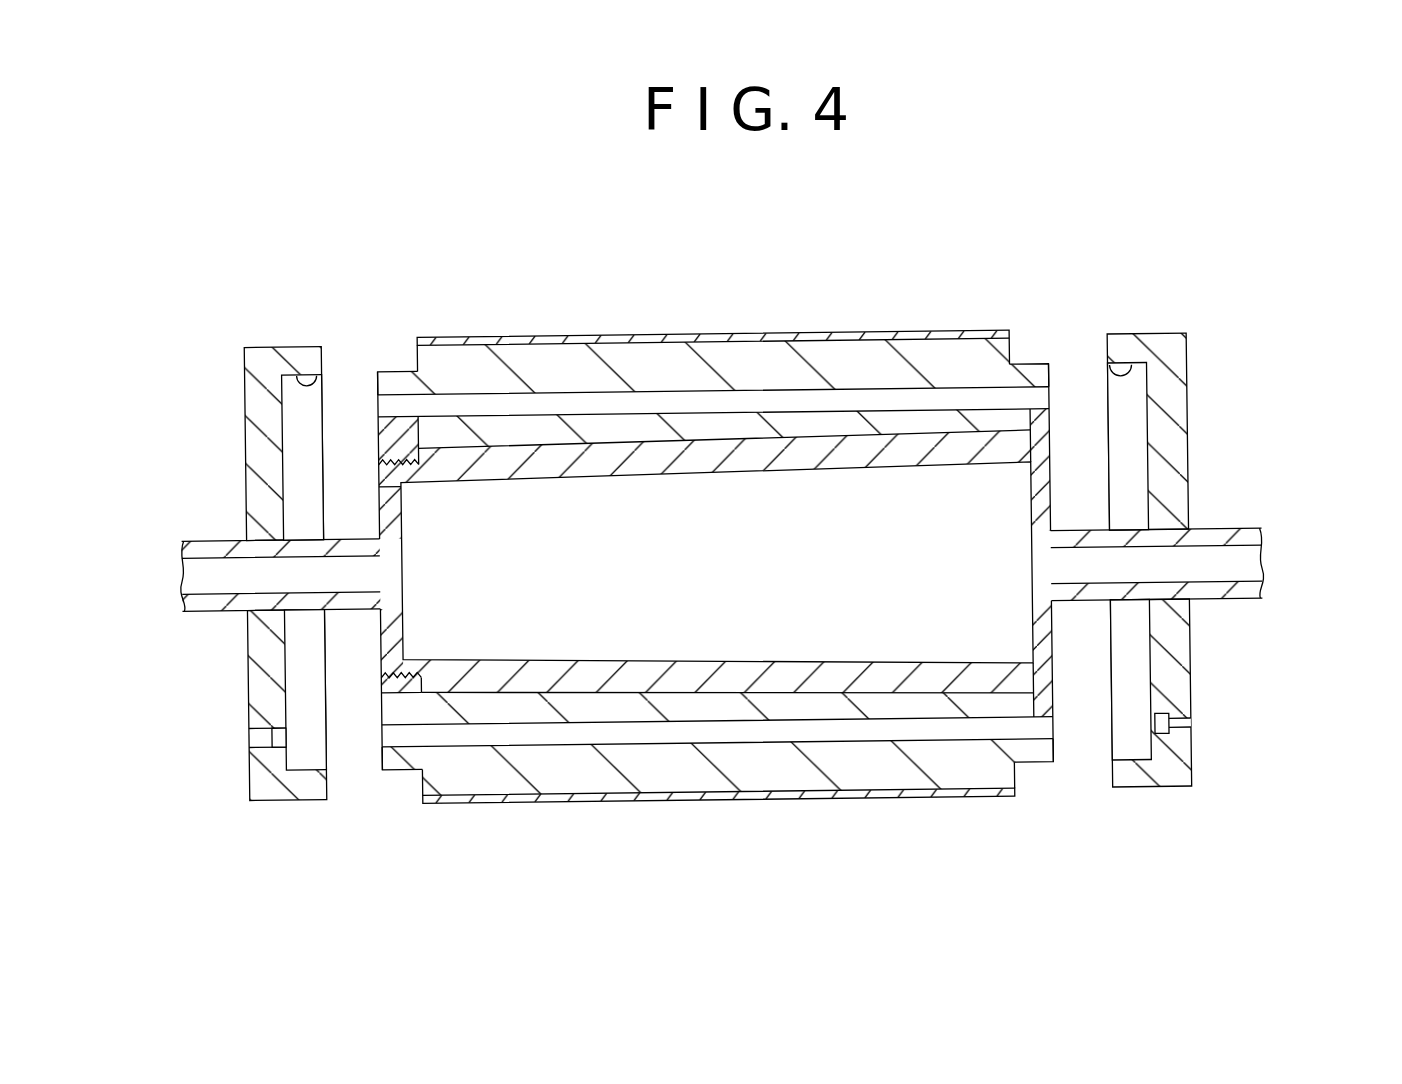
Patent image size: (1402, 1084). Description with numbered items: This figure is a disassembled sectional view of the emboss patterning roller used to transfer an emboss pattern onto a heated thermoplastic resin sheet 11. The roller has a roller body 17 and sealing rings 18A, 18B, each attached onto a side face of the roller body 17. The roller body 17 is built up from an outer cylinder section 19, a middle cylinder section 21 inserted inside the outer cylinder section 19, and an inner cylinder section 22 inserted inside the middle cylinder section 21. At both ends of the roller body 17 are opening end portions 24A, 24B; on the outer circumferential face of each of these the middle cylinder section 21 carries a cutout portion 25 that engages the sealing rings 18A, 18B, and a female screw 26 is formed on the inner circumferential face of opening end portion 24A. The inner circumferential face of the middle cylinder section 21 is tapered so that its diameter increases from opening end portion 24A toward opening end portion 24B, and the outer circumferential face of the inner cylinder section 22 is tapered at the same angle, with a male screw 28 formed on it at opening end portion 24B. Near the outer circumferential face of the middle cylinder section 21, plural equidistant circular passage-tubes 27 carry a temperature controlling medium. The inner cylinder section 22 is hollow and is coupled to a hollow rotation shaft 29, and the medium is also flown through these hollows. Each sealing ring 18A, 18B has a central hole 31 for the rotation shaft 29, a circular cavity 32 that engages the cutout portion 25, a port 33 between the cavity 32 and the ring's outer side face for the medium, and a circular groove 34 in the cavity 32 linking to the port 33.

The thermoplastic resin sheet 11 is at (718, 547).
The roller body 17 is at (736, 562).
The sealing ring 18A is at (247, 365).
The sealing ring 18B is at (1189, 353).
The outer cylinder section 19 is at (884, 334).
The middle cylinder section 21 is at (523, 358).
The inner cylinder section 22 is at (834, 663).
The opening end portion 24A is at (382, 674).
The opening end portion 24B is at (1055, 702).
The cutout portion 25 is at (1021, 367).
The female screw 26 is at (390, 472).
The passage-tube 27 is at (628, 397).
The male screw 28 is at (403, 455).
The hollow rotation shaft 29 is at (1237, 560).
The hole 31 is at (244, 554).
The circular cavity 32 is at (318, 380).
The port 33 is at (247, 720).
The groove 34 is at (279, 742).